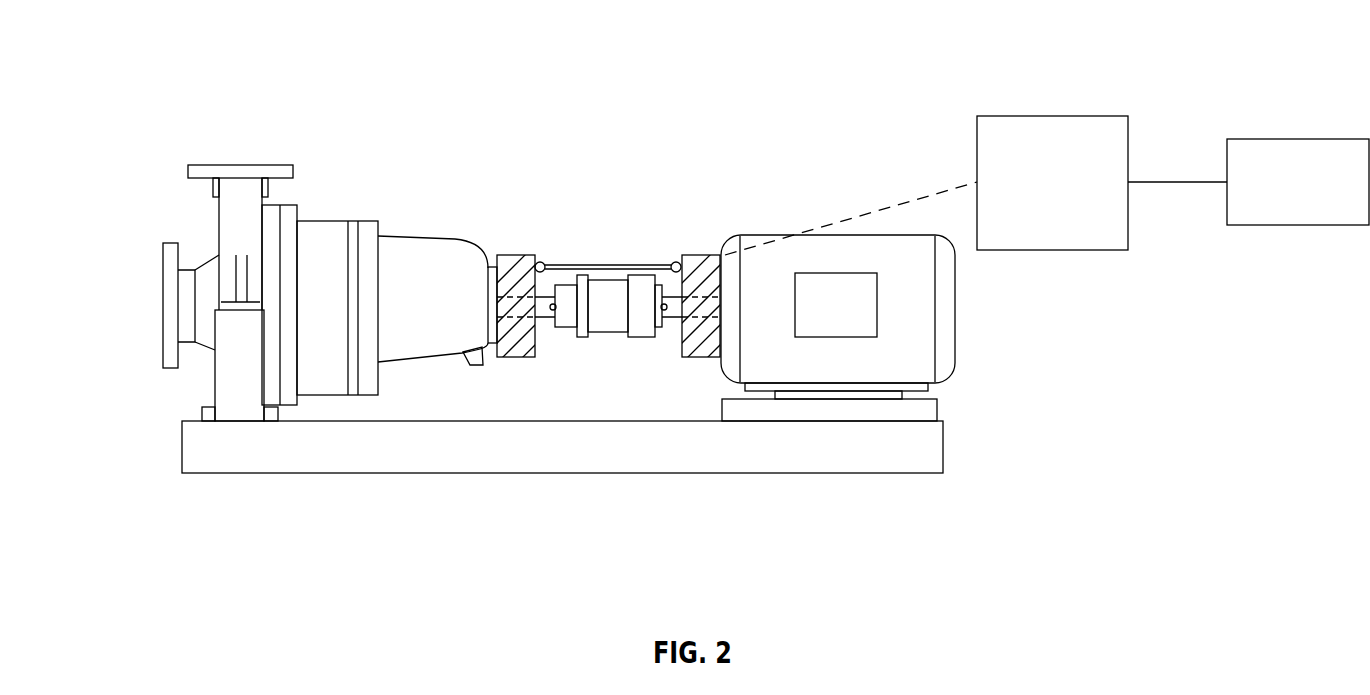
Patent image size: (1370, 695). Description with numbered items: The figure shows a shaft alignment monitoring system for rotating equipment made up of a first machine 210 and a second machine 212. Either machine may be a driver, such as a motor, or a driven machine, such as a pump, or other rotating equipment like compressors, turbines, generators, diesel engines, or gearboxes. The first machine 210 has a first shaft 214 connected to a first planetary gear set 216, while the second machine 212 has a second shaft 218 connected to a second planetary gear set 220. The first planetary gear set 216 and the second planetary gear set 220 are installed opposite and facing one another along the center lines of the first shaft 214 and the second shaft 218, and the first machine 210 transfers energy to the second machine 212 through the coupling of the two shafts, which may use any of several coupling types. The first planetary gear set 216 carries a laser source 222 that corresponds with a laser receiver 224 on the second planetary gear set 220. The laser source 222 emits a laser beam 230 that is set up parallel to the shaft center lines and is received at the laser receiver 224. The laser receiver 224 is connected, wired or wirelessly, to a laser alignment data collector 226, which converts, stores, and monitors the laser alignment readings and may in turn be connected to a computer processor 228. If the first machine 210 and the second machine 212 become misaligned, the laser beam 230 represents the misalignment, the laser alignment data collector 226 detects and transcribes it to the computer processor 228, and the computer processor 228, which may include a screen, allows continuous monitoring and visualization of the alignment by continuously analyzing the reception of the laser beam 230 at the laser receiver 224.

The first machine 210 is at (162, 303).
The second machine 212 is at (913, 322).
The first shaft 214 is at (518, 300).
The first planetary gear set 216 is at (517, 357).
The second shaft 218 is at (693, 300).
The second planetary gear set 220 is at (702, 355).
The laser source 222 is at (538, 262).
The laser receiver 224 is at (680, 262).
The laser alignment data collector 226 is at (1053, 116).
The computer processor 228 is at (1302, 139).
The laser beam 230 is at (626, 264).